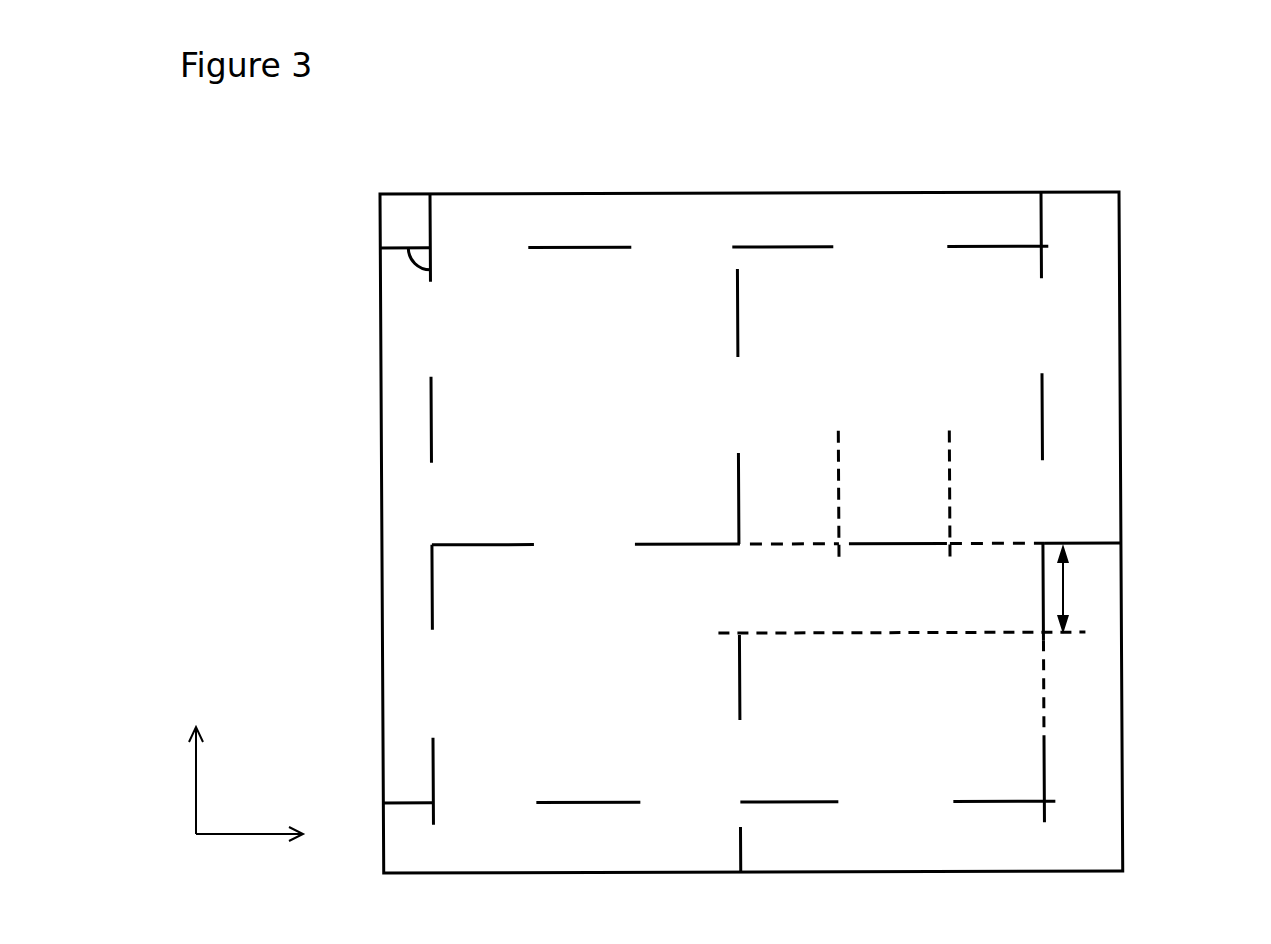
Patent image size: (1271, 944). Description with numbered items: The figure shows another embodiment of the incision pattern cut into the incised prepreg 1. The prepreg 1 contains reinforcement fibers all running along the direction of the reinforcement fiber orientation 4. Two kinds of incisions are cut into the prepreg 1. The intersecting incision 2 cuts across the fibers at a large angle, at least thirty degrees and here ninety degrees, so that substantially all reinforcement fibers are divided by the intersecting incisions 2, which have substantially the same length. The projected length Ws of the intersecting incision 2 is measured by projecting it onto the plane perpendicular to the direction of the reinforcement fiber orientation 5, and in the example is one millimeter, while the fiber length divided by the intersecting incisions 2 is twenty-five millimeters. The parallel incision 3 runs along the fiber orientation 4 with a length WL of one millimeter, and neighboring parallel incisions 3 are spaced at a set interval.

The prepreg 1 is at (1089, 470).
The intersecting incision 2 is at (778, 245).
The parallel incision 3 is at (1043, 210).
The direction of the reinforcement fiber orientation in the prepreg 4 is at (196, 783).
The plane perpendicular to the direction of the reinforcement fiber orientation in t 5 is at (253, 834).
The projected length of the intersecting incision Ws is at (948, 452).
The length of the parallel incision WL is at (1063, 605).